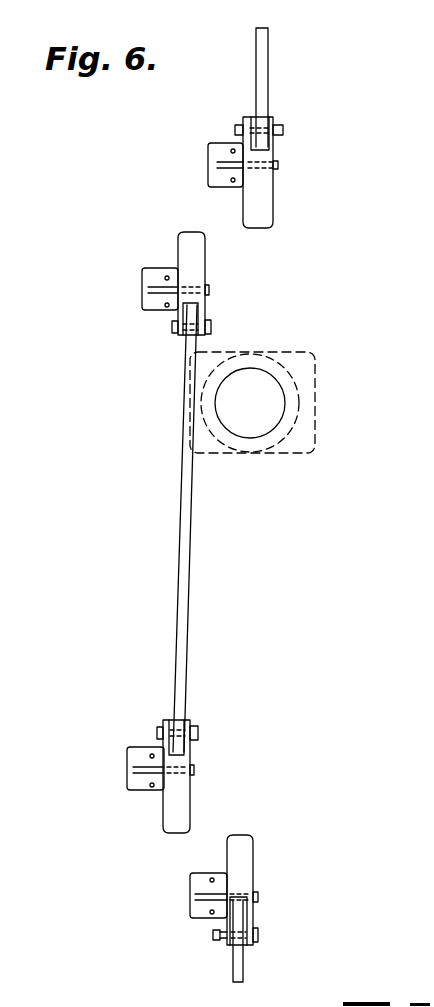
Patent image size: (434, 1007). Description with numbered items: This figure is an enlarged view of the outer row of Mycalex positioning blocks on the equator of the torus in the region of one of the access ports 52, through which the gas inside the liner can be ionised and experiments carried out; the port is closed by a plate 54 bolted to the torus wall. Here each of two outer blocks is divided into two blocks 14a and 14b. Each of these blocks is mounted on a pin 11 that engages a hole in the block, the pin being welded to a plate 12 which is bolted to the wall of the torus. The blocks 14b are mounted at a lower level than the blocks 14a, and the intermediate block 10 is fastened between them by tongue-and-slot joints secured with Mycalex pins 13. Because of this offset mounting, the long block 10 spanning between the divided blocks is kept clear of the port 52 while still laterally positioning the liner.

The intermediate block 10 is at (260, 78).
The pin 11 is at (278, 166).
The plate 12 is at (208, 152).
The Mycalex pin 13 is at (283, 130).
The block 14a is at (262, 215).
The block 14b is at (192, 238).
The port 52 is at (245, 380).
The plate 54 is at (298, 447).